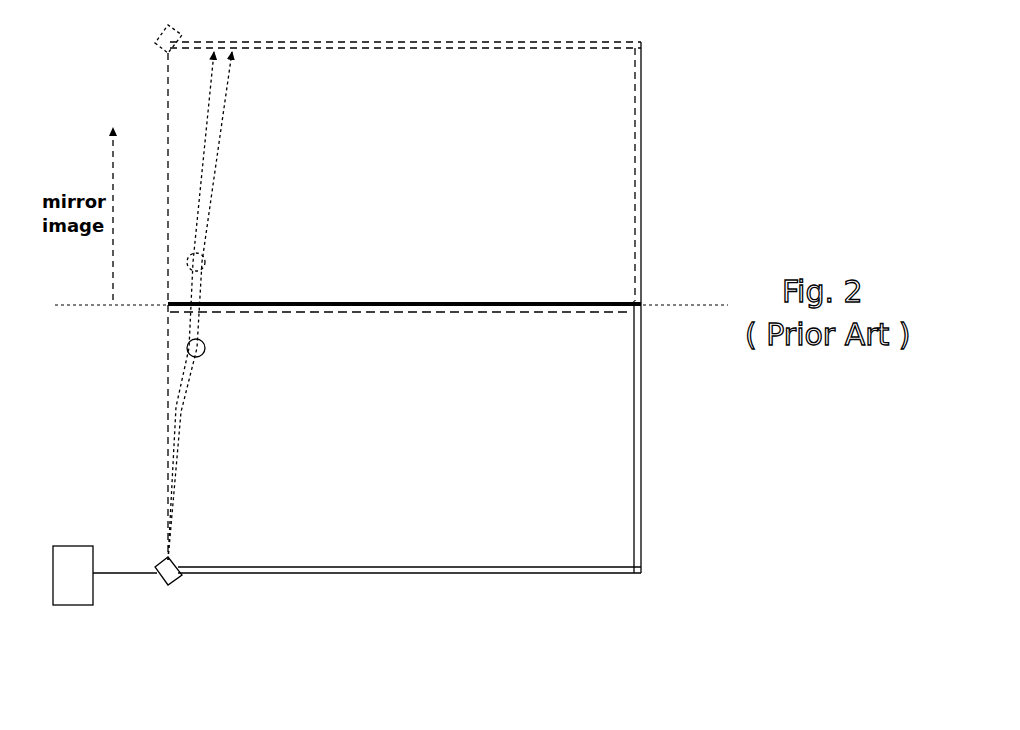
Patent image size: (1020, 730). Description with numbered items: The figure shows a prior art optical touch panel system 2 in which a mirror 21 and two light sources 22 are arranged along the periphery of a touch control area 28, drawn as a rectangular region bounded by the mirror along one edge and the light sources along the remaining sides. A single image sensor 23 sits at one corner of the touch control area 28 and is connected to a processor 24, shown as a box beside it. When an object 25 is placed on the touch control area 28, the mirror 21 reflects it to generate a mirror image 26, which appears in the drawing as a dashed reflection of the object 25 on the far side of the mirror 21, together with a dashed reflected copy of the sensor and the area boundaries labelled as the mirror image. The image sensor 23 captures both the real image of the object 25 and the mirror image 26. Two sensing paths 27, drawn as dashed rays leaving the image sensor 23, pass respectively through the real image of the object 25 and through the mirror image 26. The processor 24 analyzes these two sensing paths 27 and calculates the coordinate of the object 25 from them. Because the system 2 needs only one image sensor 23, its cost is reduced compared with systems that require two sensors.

The optical touch panel system 2 is at (695, 250).
The mirror 21 is at (583, 300).
The light sources 22 is at (617, 567).
The image sensor 23 is at (163, 583).
The processor 24 is at (73, 546).
The object 25 is at (187, 352).
The mirror image 26 is at (189, 268).
The sensing paths 27 is at (179, 412).
The touch control area 28 is at (388, 520).